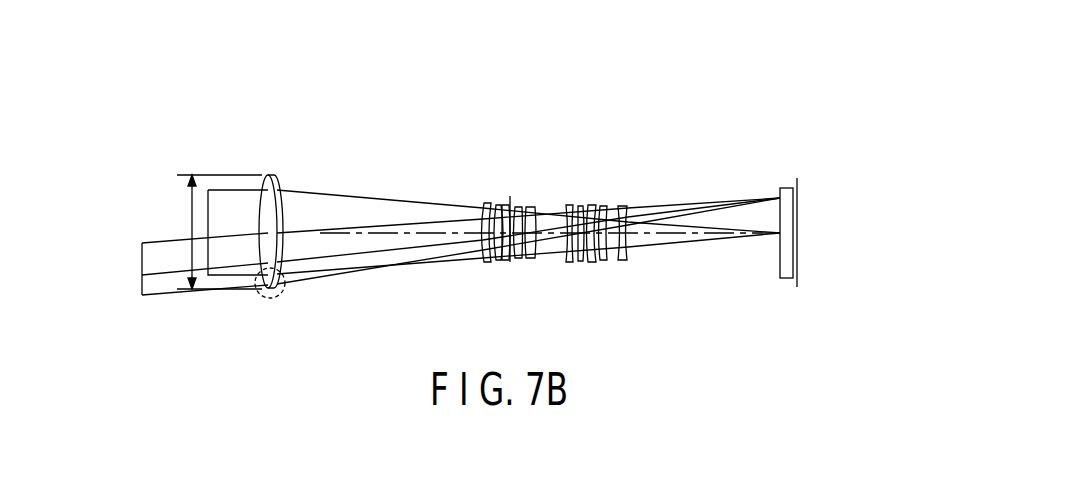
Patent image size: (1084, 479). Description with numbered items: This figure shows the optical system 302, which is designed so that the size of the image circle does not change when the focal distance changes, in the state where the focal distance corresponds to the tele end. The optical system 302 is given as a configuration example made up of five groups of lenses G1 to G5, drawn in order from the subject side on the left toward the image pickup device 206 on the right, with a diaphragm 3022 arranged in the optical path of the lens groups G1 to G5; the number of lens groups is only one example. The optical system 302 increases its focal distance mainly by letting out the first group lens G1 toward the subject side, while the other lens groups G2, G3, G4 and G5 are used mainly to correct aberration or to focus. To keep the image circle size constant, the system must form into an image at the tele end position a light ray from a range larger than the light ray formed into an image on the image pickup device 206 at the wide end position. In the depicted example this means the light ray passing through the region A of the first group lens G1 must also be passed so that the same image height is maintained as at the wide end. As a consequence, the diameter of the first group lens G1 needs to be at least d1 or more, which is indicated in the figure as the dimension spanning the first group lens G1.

The optical system 302 is at (777, 135).
The diaphragm 3022 is at (510, 286).
The first group lens G1 is at (280, 180).
The second group lens G2 is at (503, 201).
The third group lens G3 is at (542, 201).
The fourth group lens G4 is at (597, 201).
The fifth group lens G5 is at (625, 201).
The image pickup device 206 is at (787, 188).
The diameter of the first group lens d1 is at (214, 232).
The region of the first group lens A is at (271, 298).